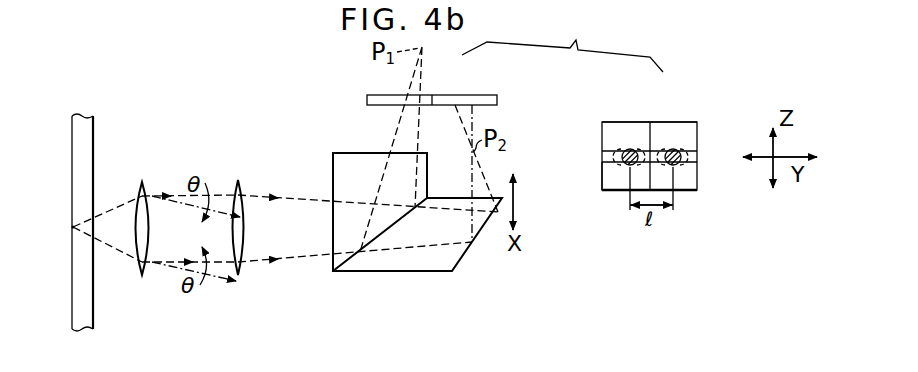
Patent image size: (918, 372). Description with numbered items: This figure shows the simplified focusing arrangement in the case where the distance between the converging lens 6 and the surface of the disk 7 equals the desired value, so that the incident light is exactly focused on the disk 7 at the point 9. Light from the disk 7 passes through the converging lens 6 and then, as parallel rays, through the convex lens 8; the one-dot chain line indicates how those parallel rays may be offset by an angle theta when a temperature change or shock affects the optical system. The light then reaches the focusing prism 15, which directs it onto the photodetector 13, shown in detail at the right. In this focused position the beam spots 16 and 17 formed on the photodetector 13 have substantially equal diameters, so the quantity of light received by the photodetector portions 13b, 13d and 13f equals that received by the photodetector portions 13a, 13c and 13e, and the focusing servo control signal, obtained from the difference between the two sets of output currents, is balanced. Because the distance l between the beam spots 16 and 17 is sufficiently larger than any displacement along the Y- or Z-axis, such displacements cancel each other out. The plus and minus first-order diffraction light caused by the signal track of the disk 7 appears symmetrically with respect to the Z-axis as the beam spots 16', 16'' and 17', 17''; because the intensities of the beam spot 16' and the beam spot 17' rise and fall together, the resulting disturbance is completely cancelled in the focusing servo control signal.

The converging lens 6 is at (144, 274).
The disk 7 is at (93, 116).
The convex lens 8 is at (242, 272).
The light source point 9 is at (73, 228).
The photodetector 13 is at (474, 97).
The photodetector portion 13a is at (693, 137).
The photodetector portion 13b is at (696, 162).
The photodetector portion 13c is at (698, 190).
The photodetector portion 13d is at (604, 129).
The photodetector portion 13e is at (604, 155).
The photodetector portion 13f is at (604, 181).
The focusing prism 15 is at (400, 273).
The beam spot 16 is at (639, 124).
The beam spot 16' is at (604, 123).
The beam spot 16'' is at (671, 123).
The beam spot 17 is at (701, 124).
The beam spot 17' is at (696, 197).
The beam spot 17'' is at (706, 105).